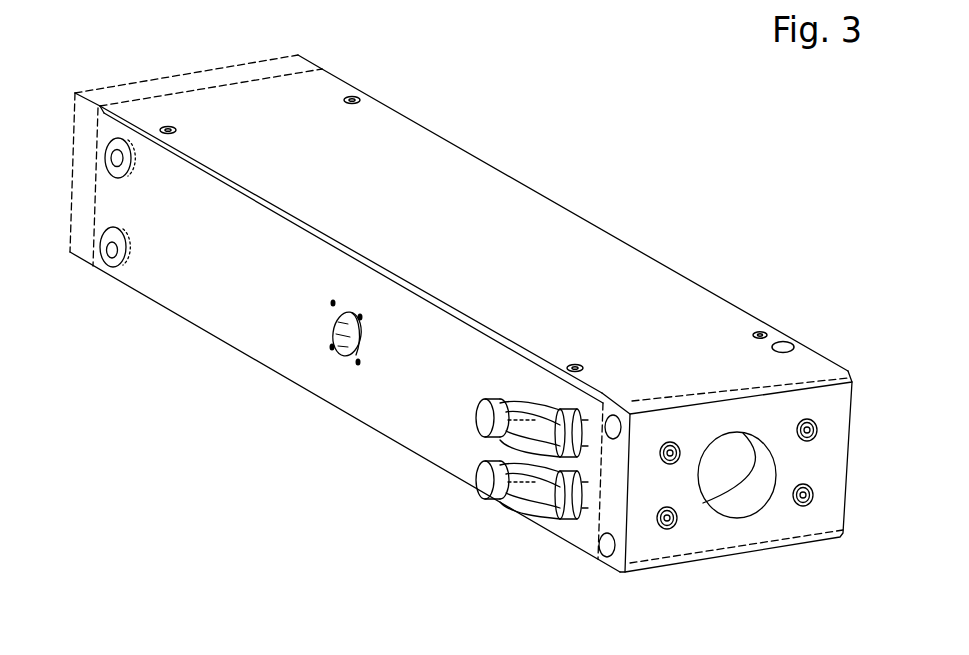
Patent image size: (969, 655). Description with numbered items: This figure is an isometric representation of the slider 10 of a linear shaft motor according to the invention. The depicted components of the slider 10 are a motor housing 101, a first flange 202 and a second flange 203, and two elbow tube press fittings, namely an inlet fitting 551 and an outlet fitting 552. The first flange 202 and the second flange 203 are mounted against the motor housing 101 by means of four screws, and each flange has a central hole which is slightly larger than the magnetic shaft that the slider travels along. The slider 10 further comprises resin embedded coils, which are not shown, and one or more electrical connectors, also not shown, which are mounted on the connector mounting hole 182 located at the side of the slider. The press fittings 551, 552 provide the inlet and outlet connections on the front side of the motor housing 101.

The slider 10 is at (527, 151).
The motor housing 101 is at (237, 318).
The connector mounting hole 182 is at (342, 357).
The first flange 202 is at (683, 542).
The second flange 203 is at (70, 252).
The elbow tube press fitting (inlet) 551 is at (473, 422).
The elbow tube press fitting (outlet) 552 is at (473, 483).